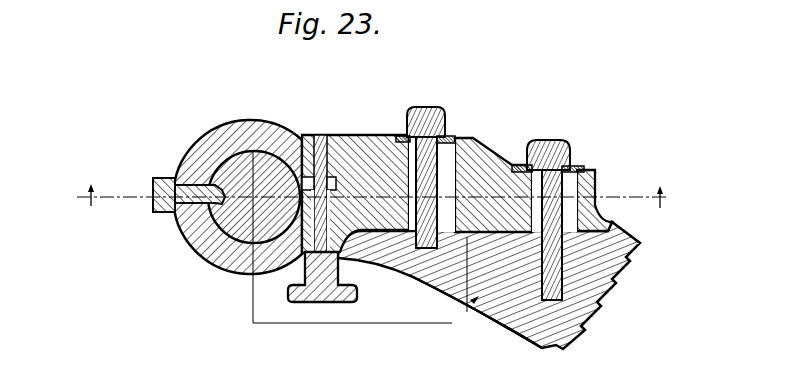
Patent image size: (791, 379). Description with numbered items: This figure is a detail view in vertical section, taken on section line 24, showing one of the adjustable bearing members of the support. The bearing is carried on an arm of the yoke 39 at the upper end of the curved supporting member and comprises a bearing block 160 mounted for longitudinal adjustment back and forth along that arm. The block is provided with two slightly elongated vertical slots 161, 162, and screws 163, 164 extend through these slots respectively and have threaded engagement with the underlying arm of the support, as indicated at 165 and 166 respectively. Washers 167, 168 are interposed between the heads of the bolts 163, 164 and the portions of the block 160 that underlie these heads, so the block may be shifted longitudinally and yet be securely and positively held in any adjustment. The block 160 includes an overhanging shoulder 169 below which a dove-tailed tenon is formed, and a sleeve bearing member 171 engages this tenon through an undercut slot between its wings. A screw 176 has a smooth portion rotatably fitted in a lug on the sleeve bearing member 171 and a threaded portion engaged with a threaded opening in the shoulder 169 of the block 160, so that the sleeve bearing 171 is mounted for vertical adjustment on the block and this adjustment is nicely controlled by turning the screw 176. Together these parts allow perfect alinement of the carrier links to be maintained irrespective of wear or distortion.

The section line 24- 24 is at (360, 197).
The yoke 39 is at (430, 323).
The bearing block 160 is at (362, 124).
The vertical slot 161 is at (445, 150).
The vertical slot 162 is at (566, 189).
The screw 163 is at (434, 116).
The screw 164 is at (549, 141).
The threaded engagement 165 is at (410, 258).
The threaded engagement 166 is at (530, 288).
The washer 167 is at (398, 136).
The washer 168 is at (574, 168).
The overhanging shoulder 169 is at (313, 142).
The sleeve bearing member 171 is at (197, 245).
The screw 176 is at (305, 256).